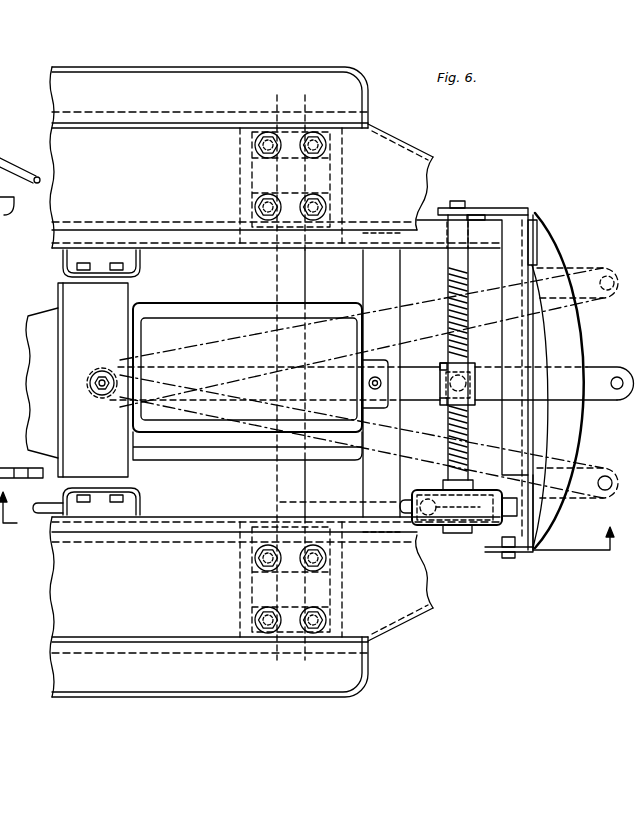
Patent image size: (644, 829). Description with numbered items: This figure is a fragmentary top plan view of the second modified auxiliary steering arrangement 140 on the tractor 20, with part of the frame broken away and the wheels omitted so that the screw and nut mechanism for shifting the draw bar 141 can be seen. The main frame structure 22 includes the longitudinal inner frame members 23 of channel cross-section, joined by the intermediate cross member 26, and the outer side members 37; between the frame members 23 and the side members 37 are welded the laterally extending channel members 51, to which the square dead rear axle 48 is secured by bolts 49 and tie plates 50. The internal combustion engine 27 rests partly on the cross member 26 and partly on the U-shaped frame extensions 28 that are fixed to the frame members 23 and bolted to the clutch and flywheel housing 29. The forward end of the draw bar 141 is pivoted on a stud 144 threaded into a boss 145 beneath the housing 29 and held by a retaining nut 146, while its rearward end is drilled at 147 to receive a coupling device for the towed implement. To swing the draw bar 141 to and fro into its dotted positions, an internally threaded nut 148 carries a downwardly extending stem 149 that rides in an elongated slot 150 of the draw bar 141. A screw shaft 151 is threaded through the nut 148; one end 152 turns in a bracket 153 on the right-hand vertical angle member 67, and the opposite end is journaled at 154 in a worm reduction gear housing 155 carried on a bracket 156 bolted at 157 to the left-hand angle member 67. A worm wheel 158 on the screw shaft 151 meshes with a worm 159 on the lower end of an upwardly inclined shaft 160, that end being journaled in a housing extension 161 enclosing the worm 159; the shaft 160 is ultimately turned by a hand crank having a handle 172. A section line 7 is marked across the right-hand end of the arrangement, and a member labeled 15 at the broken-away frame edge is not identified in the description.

The section line 7- 7 is at (307, 521).
The frame side member 15 is at (61, 147).
The tractor 20 is at (406, 136).
The main frame structure 22 is at (21, 369).
The longitudinal inner frame members 23 is at (194, 250).
The intermediate cross member 26 is at (365, 276).
The internal combustion engine 27 is at (190, 318).
The frame extensions 28 is at (139, 268).
The clutch and flywheel housing 29 is at (68, 300).
The side members 37 is at (252, 80).
The rear axle 48 is at (277, 283).
The bolts 49 is at (324, 147).
The tie plates 50 is at (290, 157).
The channel members 51 is at (240, 176).
The vertical angle member 67 is at (535, 213).
The modified auxiliary steering arrangement 140 is at (523, 202).
The draw bar 141 is at (600, 375).
The stud 144 is at (103, 398).
The boss 145 is at (120, 374).
The retaining nut 146 is at (92, 394).
The drilled hole 147 is at (617, 392).
The internally threaded nut 148 is at (442, 368).
The stem 149 is at (468, 378).
The elongated slot 150 is at (445, 405).
The screw shaft 151 is at (450, 292).
The end of screw shaft 152 is at (457, 200).
The bracket 153 is at (478, 208).
The journal 154 is at (470, 522).
The worm reduction gear housing 155 is at (512, 496).
The bracket 156 is at (488, 530).
The bolts 157 is at (507, 560).
The worm wheel 158 is at (471, 488).
The worm 159 is at (445, 525).
The upwardly inclined shaft 160 is at (8, 150).
The housing extension 161 is at (431, 488).
The handle 172 is at (9, 50).